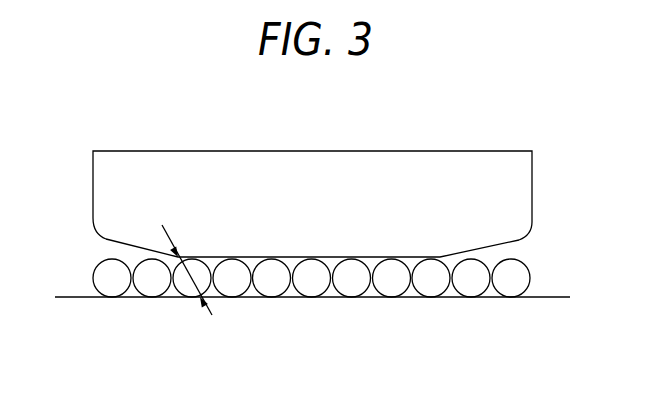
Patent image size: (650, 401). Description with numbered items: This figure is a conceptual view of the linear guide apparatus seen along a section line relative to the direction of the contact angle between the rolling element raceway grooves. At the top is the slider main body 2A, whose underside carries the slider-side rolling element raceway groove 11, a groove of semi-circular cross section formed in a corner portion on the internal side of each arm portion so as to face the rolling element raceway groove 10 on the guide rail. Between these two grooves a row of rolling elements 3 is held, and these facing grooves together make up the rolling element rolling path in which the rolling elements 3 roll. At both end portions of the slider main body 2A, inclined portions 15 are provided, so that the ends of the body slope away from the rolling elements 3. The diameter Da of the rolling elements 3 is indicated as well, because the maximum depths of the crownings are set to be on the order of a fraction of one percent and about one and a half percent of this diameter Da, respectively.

The slider main body 2A is at (396, 191).
The rolling elements 3 is at (430, 285).
The rolling element raceway groove 10 is at (251, 293).
The slider-side rolling element raceway groove 11 is at (296, 264).
The inclined portions 15 is at (100, 243).
The diameter of the rolling elements Da is at (187, 266).